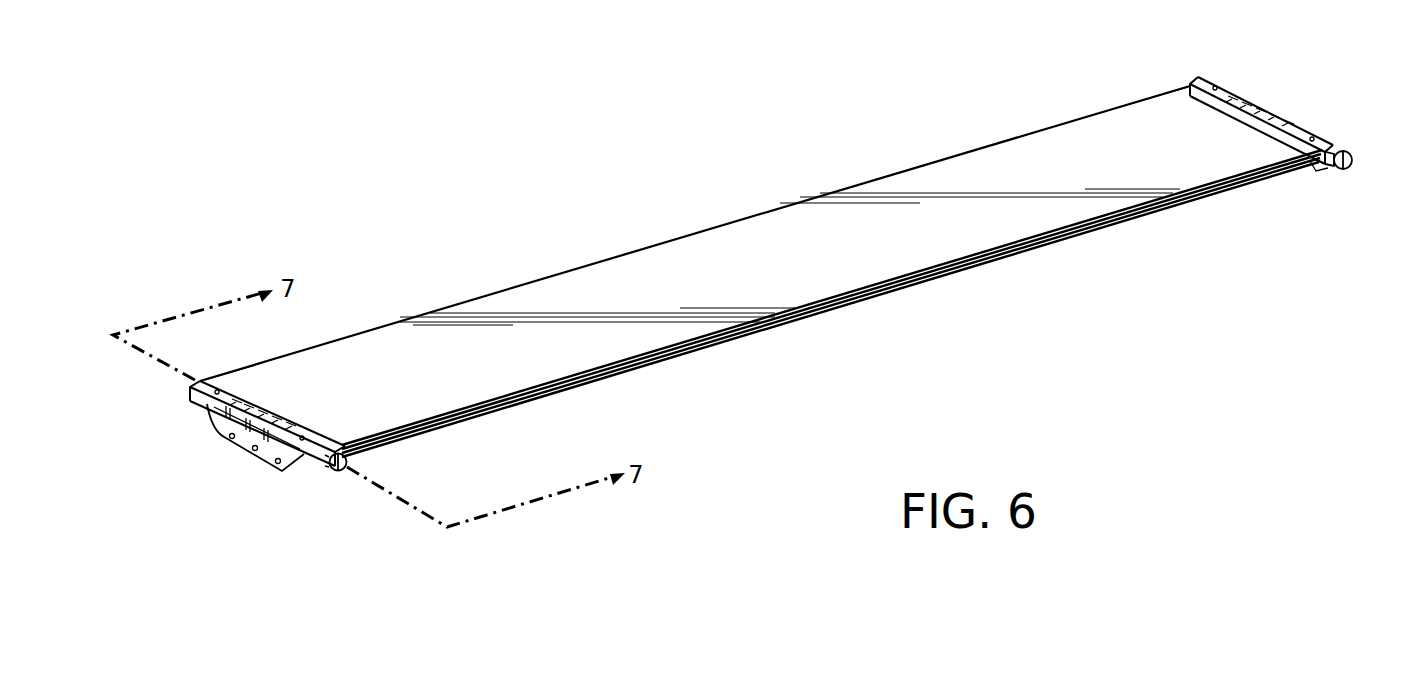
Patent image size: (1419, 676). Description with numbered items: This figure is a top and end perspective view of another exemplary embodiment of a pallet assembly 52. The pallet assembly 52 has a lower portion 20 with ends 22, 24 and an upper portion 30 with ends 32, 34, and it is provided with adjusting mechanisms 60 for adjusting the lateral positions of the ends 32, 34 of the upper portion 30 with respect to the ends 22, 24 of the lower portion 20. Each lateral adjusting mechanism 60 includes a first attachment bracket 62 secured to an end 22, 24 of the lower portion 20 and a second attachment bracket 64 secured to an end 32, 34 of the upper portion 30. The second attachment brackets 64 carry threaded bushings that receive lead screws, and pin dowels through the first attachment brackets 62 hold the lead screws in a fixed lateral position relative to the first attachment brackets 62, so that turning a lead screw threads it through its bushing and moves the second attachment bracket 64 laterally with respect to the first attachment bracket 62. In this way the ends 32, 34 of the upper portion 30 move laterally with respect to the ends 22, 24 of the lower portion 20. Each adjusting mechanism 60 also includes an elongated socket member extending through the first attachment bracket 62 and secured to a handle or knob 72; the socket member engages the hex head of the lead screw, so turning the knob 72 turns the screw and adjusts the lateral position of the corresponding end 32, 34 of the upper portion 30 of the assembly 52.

The lower portion 20 is at (283, 486).
The end of lower portion 22 is at (223, 423).
The end of lower portion 24 is at (1320, 165).
The upper portion 30 is at (710, 247).
The end of upper portion 32 is at (255, 380).
The end of upper portion 34 is at (1183, 105).
The pallet assembly 52 is at (823, 56).
The adjusting mechanism 60 is at (172, 388).
The first attachment bracket 62 is at (200, 398).
The second attachment bracket 64 is at (280, 417).
The knob 72 is at (333, 472).